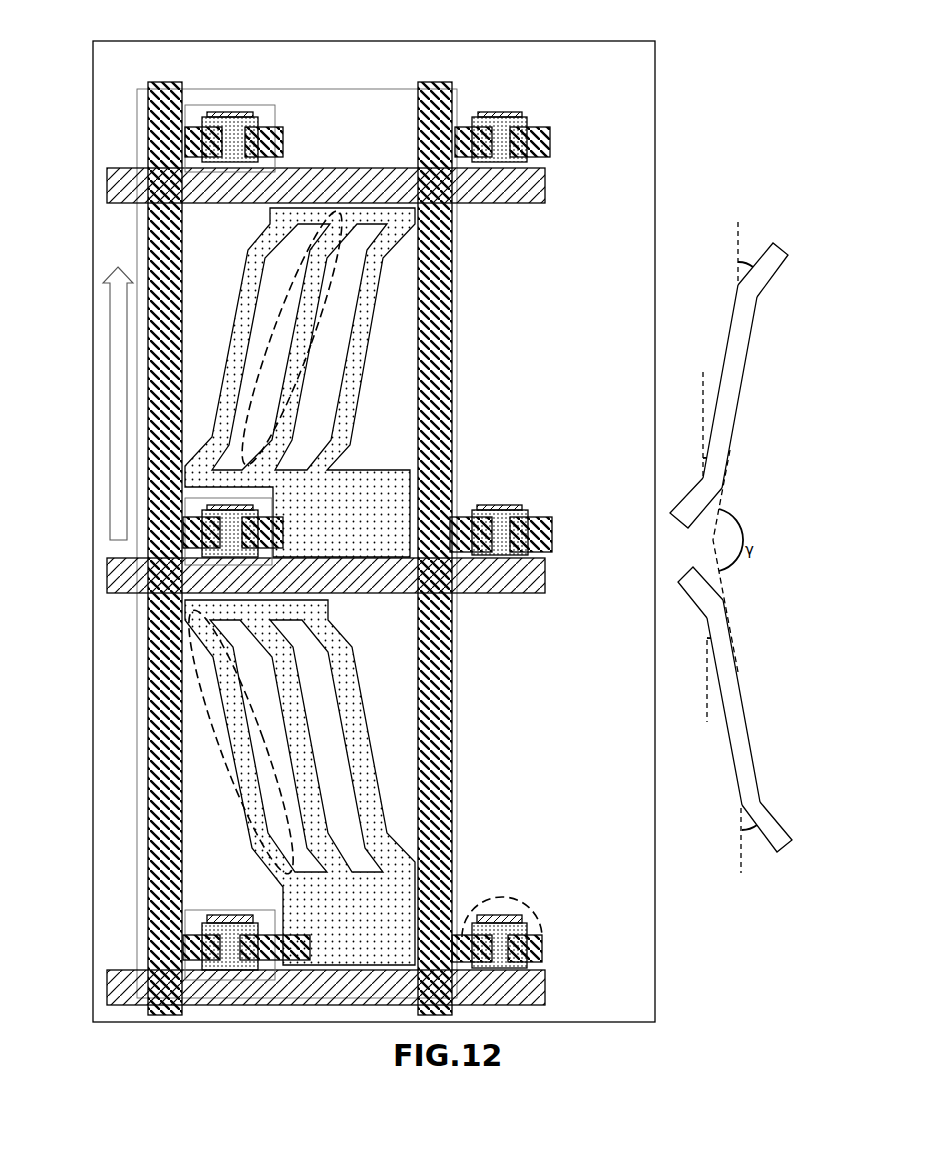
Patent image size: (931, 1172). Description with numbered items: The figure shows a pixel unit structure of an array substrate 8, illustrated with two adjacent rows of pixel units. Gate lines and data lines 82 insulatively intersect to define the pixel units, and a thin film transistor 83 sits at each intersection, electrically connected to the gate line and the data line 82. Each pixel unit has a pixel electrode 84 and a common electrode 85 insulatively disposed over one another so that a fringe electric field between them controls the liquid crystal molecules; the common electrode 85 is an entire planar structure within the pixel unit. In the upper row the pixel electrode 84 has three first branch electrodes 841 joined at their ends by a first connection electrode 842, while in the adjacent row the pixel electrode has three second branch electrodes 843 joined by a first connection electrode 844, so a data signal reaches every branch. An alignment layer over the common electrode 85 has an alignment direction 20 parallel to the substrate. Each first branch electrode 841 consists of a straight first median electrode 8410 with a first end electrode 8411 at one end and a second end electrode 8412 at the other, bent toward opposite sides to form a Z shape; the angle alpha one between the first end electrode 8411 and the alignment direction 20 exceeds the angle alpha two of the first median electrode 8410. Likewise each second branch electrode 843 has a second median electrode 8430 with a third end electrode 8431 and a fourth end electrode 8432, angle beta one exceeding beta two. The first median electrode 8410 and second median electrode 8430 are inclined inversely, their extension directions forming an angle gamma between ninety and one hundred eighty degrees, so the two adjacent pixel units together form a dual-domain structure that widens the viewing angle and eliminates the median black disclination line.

The array substrate 8 is at (285, 55).
The alignment direction 20 is at (115, 322).
The data line 82 is at (500, 190).
The thin film transistor 83 is at (535, 902).
The pixel electrode 84 is at (385, 292).
The common electrode 85 is at (458, 458).
The first branch electrode 841 is at (240, 330).
The first connection electrode 842 is at (345, 207).
The second branch electrode 843 is at (200, 745).
The first connection electrode 844 is at (285, 605).
The first median electrode 8410 is at (735, 387).
The first end electrode 8411 is at (762, 277).
The second end electrode 8412 is at (710, 495).
The second median electrode 8430 is at (733, 722).
The third end electrode 8431 is at (702, 597).
The fourth end electrode 8432 is at (765, 820).